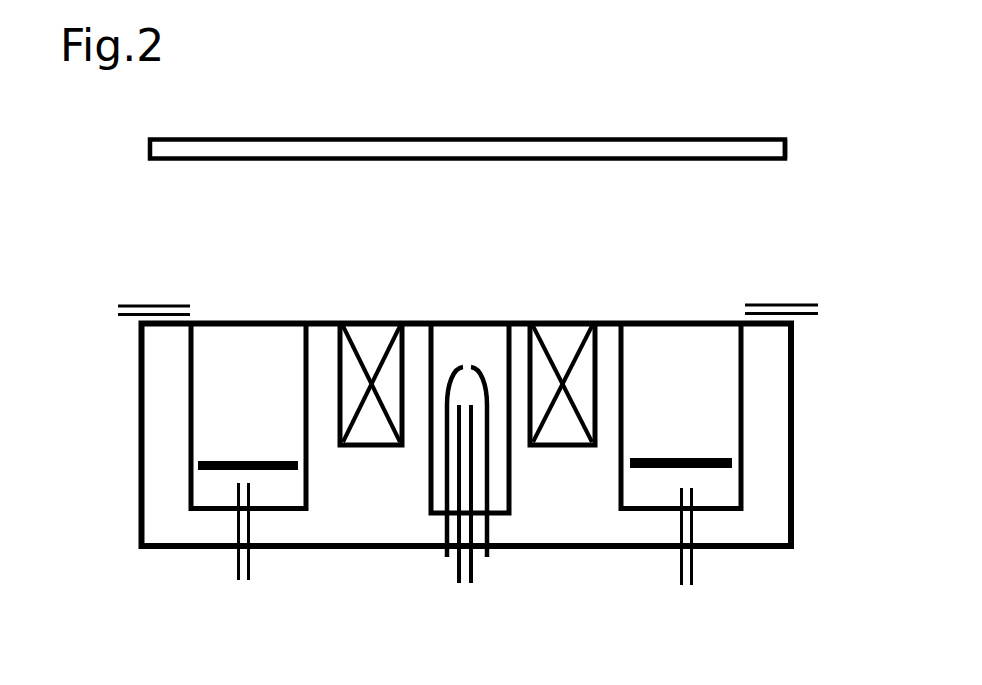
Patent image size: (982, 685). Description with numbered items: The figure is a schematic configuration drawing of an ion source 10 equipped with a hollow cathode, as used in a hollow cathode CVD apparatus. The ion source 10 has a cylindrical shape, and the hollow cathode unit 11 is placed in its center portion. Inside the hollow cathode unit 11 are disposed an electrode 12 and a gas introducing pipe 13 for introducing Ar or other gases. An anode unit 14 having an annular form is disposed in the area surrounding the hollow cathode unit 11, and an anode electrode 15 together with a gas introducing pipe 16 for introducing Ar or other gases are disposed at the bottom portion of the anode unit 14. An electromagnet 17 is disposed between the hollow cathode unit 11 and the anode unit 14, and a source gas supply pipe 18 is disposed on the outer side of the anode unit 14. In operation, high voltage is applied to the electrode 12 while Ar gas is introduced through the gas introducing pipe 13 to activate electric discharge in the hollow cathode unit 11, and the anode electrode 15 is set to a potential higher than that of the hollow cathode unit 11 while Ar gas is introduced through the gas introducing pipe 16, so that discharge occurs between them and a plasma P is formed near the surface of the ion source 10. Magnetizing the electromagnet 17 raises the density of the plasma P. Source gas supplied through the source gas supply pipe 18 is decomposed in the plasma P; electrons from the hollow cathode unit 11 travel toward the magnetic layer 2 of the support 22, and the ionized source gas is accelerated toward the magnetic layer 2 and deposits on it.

The magnetic layer 2 is at (600, 160).
The support 22 is at (788, 148).
The plasma P is at (699, 290).
The ion source 10 is at (794, 450).
The hollow cathode unit 11 is at (512, 497).
The electrode 12 is at (443, 463).
The gas introducing pipe 13 is at (456, 570).
The anode unit 14 is at (190, 417).
The anode electrode 15 is at (208, 471).
The gas introducing pipe 16 is at (249, 566).
The electromagnet 17 is at (580, 447).
The source gas supply pipe 18 is at (152, 305).